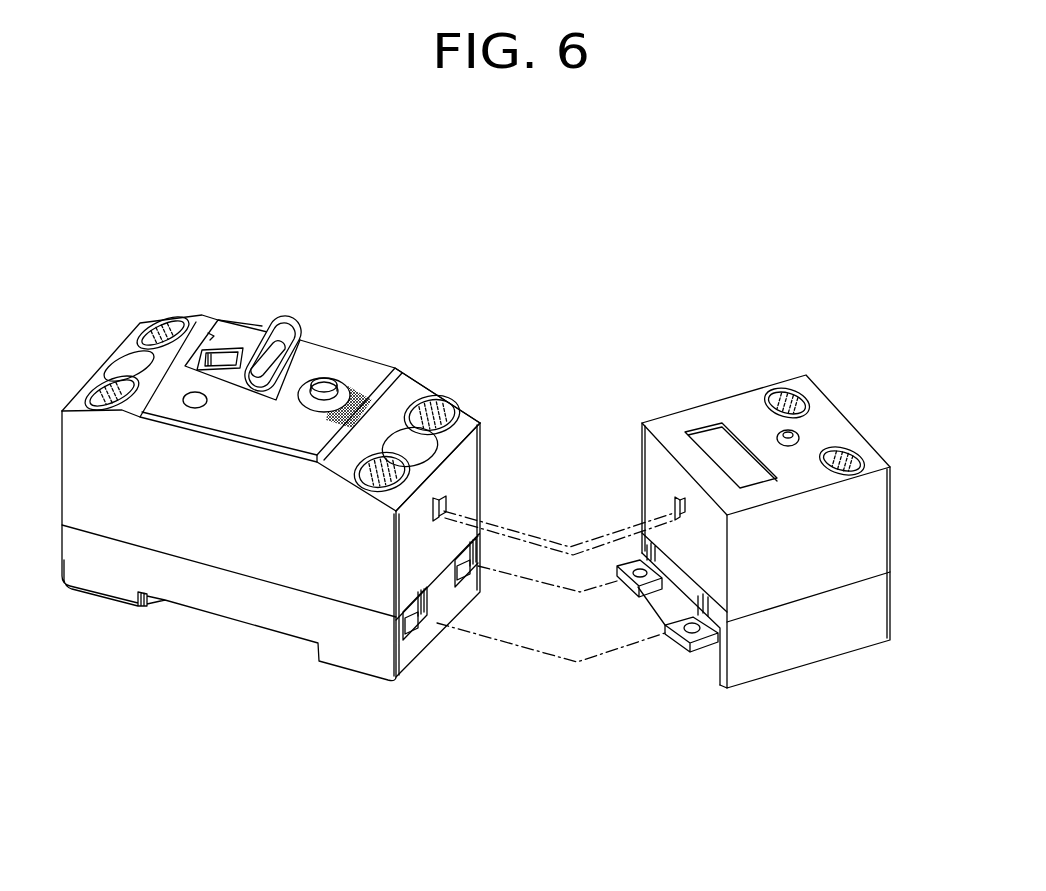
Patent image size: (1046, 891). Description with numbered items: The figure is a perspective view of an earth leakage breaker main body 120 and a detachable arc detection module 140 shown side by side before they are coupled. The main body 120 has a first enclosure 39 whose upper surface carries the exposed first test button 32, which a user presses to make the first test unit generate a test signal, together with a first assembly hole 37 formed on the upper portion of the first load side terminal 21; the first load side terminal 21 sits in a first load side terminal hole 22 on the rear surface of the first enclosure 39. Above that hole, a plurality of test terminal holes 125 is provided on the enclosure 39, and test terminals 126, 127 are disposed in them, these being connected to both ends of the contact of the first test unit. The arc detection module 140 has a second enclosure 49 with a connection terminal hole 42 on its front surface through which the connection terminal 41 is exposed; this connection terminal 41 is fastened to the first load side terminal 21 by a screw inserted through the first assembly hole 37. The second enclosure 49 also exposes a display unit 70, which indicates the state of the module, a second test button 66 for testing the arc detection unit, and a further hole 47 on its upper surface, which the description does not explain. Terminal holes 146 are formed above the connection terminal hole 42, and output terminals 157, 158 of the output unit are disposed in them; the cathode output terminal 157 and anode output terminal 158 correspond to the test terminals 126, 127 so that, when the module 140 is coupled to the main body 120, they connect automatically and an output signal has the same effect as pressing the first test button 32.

The main body 120 is at (164, 607).
The first enclosure 39 is at (250, 560).
The first test button 32 is at (325, 388).
The first assembly hole 37 is at (434, 408).
The first load side terminal 21 is at (416, 622).
The first load side terminal hole 22 is at (412, 628).
The test terminal holes 125 is at (447, 508).
The test terminal 126 is at (450, 514).
The test terminal 127 is at (446, 498).
The arc detection module 140 is at (643, 400).
The second enclosure 49 is at (878, 521).
The display unit 70 is at (712, 440).
The second test button 66 is at (796, 435).
The terminal hole 47 is at (860, 458).
The terminal holes 146 is at (673, 500).
The cathode output terminal 157 is at (675, 513).
The anode output terminal 158 is at (697, 525).
The connection terminal 41 is at (690, 653).
The connection terminal hole 42 is at (721, 674).